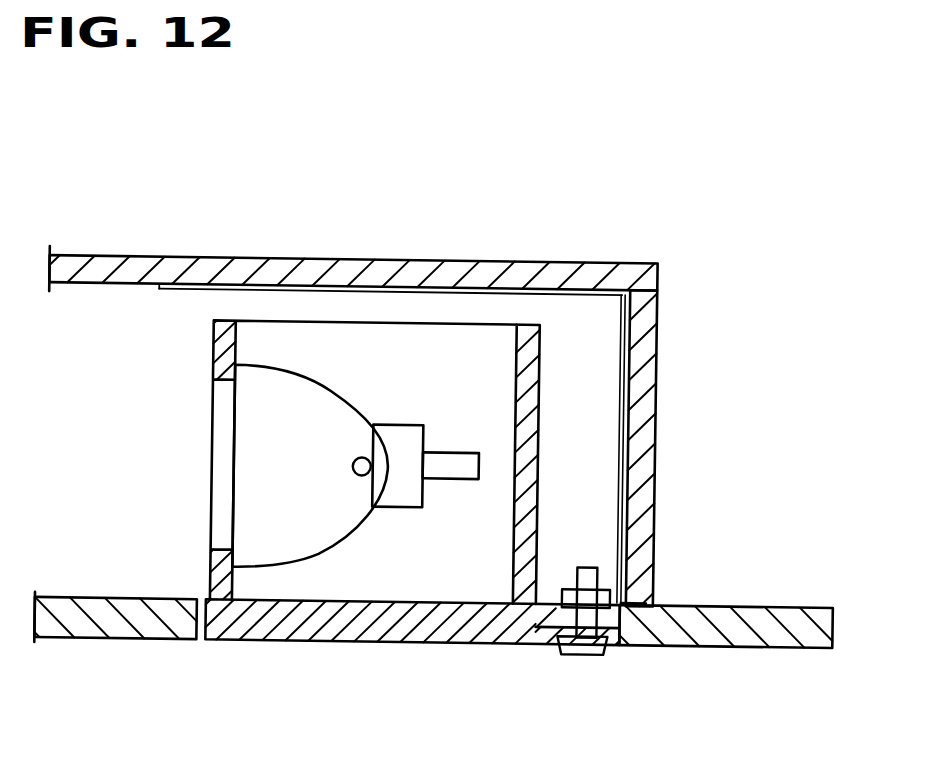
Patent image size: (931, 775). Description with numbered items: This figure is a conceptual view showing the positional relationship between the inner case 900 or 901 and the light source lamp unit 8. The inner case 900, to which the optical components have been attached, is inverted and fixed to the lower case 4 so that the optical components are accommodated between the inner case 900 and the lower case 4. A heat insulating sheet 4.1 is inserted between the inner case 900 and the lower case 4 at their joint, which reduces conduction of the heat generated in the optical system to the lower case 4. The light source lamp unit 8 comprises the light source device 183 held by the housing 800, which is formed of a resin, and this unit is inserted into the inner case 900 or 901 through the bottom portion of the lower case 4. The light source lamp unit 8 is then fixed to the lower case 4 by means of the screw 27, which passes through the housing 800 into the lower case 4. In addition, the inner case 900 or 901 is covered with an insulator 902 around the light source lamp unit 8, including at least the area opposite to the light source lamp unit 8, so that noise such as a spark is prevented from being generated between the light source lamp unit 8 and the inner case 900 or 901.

The inner case 900 is at (225, 259).
The inner case 901 is at (391, 212).
The insulator 902 is at (562, 285).
The light source lamp unit 8 is at (548, 450).
The housing 800 is at (381, 642).
The light source device 183 is at (301, 384).
The screw 27 is at (583, 656).
The lower case 4 is at (107, 644).
The heat insulating sheet 4.1 is at (650, 593).